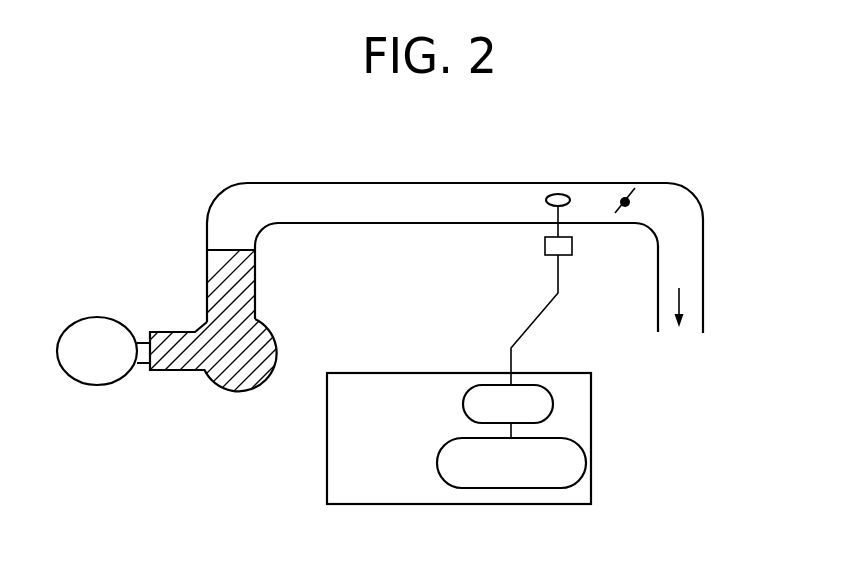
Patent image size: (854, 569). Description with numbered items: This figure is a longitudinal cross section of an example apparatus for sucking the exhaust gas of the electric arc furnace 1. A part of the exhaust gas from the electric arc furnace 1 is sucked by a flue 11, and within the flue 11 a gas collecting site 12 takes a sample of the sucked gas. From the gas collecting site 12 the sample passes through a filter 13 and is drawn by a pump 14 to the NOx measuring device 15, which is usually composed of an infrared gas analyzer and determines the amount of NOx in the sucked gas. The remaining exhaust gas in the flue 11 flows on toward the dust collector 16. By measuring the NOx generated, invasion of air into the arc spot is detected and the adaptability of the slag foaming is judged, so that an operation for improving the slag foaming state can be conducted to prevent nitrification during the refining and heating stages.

The electric arc furnace 1 is at (99, 382).
The flue 11 is at (439, 197).
The gas collecting site 12 is at (562, 190).
The filter 13 is at (572, 245).
The pump 14 is at (553, 400).
The NOx measuring device 15 is at (586, 462).
The dust collector 16 is at (682, 302).